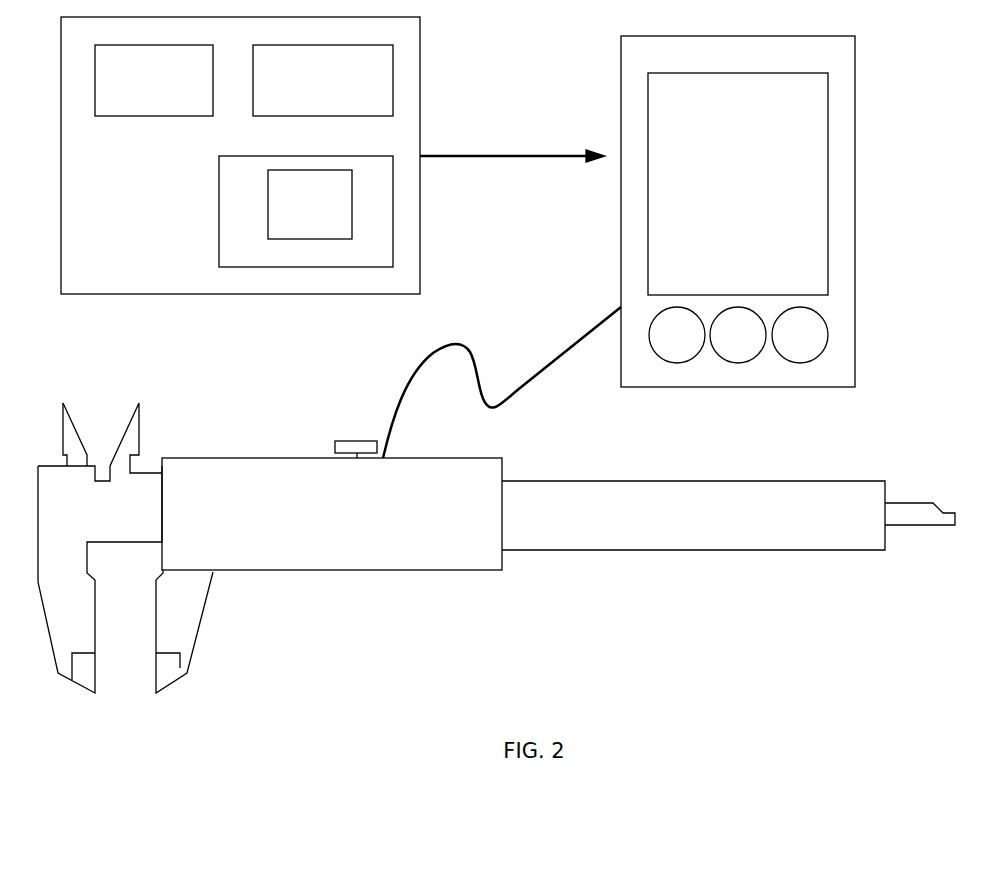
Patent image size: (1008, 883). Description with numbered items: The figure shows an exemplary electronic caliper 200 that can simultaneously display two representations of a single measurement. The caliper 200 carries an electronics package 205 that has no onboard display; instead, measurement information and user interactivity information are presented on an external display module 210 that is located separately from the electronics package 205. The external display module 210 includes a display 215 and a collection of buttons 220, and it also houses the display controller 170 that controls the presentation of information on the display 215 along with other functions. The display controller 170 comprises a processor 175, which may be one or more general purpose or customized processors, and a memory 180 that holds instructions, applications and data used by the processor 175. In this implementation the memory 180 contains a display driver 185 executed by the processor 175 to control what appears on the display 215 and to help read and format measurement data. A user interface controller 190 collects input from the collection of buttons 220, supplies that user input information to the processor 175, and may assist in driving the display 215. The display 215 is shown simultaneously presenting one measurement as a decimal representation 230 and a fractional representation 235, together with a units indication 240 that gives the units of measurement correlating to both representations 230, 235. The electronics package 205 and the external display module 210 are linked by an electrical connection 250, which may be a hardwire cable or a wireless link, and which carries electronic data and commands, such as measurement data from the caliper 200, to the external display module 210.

The display controller 170 is at (240, 155).
The processor 175 is at (154, 80).
The memory 180 is at (306, 200).
The display driver 185 is at (310, 204).
The user interface controller 190 is at (323, 80).
The electronic caliper 200 is at (496, 548).
The electronics package 205 is at (493, 466).
The external display module 210 is at (738, 211).
The display 215 is at (738, 184).
The collection of buttons 220 is at (738, 335).
The decimal representation 230 is at (775, 142).
The fractional representation 235 is at (772, 186).
The units indication 240 is at (726, 243).
The electrical connection 250 is at (547, 380).